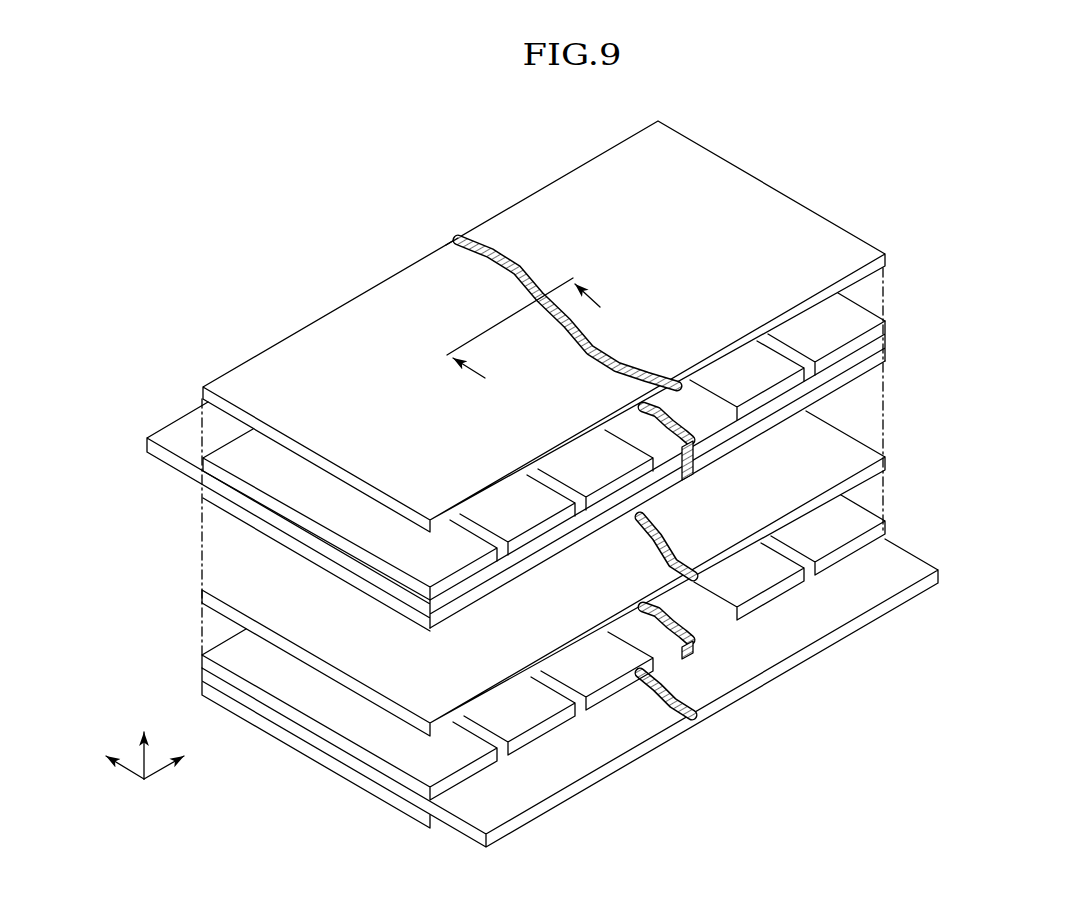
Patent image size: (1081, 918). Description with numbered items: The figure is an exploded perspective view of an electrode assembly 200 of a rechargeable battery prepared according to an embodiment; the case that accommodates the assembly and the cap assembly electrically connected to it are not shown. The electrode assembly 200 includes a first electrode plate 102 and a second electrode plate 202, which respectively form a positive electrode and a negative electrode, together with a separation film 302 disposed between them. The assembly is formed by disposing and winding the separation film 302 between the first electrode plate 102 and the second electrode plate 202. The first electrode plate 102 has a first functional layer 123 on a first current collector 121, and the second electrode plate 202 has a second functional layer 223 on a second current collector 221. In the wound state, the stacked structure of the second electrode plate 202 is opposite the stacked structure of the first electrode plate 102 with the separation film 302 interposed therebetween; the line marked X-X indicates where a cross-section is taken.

The electrode assembly 200 is at (477, 129).
The separation film 302 is at (897, 250).
The second electrode plate 202 is at (532, 462).
The second current collector 221 is at (163, 439).
The second functional layer 223 is at (247, 465).
The first electrode plate 102 is at (636, 679).
The first current collector 121 is at (502, 798).
The first functional layer 123 is at (532, 733).